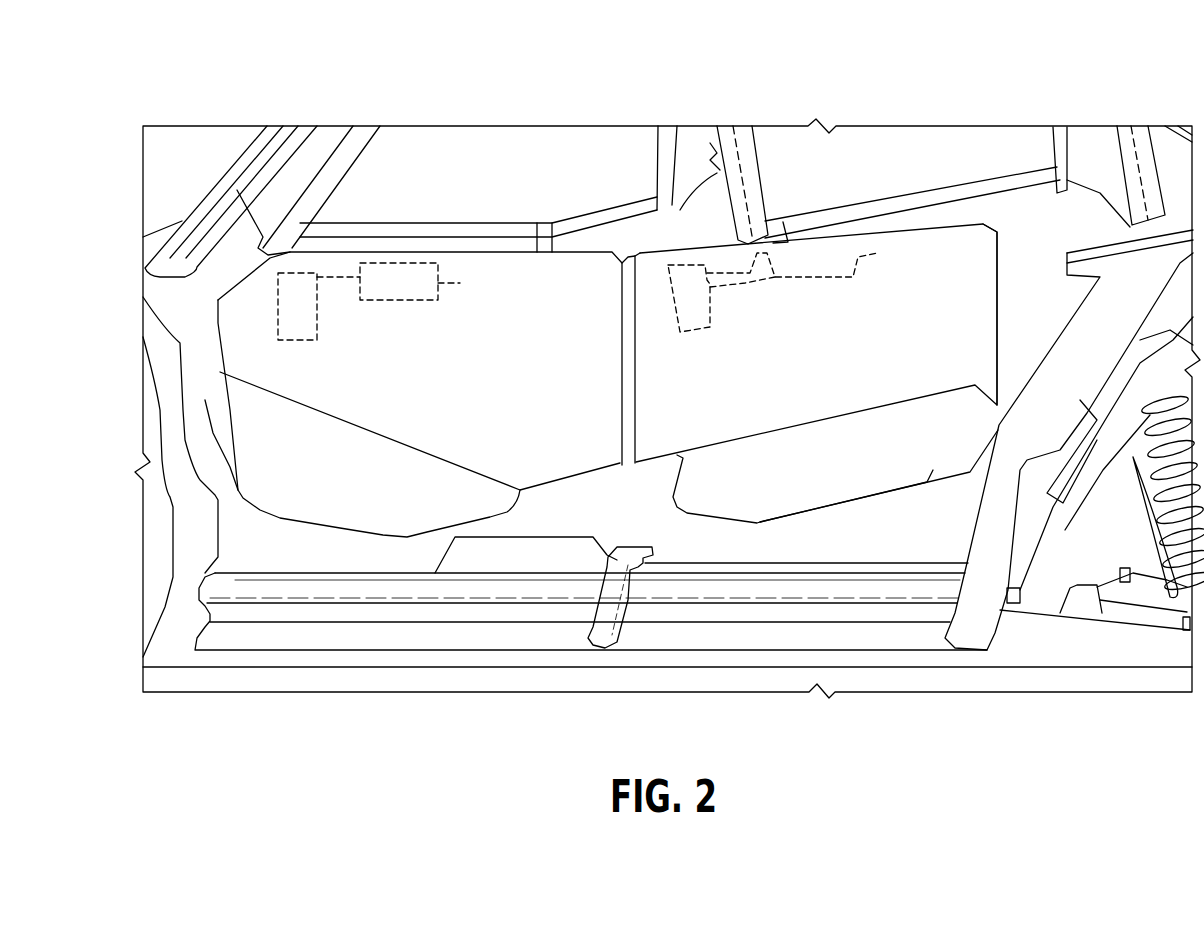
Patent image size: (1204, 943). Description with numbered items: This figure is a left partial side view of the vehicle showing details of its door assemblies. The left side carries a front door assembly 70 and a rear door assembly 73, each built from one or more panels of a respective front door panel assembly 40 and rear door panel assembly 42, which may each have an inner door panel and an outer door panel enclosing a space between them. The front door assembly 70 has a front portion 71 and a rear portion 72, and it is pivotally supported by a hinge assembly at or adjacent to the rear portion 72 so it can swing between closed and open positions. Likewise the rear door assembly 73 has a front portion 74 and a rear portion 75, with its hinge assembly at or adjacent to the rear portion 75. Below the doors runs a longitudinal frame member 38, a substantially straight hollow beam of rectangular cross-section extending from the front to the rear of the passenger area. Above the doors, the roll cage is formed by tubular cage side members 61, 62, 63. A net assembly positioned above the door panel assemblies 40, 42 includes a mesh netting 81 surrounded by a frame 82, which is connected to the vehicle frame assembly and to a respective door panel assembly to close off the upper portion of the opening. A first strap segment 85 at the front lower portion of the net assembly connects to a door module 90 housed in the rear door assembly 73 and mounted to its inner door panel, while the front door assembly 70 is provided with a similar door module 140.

The longitudinal frame member 38 is at (360, 633).
The front door panel assembly 40 is at (380, 427).
The rear door panel assembly 42 is at (827, 415).
The first cage side member 61 is at (255, 175).
The second cage side member 62 is at (740, 137).
The third cage side member 63 is at (1145, 153).
The front door assembly 70 is at (493, 270).
The front portion 71 is at (237, 310).
The rear portion 72 is at (618, 347).
The rear door assembly 73 is at (918, 250).
The front portion 74 is at (637, 370).
The rear portion 75 is at (988, 307).
The mesh netting 81 is at (793, 153).
The frame 82 is at (1018, 180).
The first strap segment 85 is at (757, 230).
The door module 90 is at (697, 327).
The door module 140 is at (403, 295).